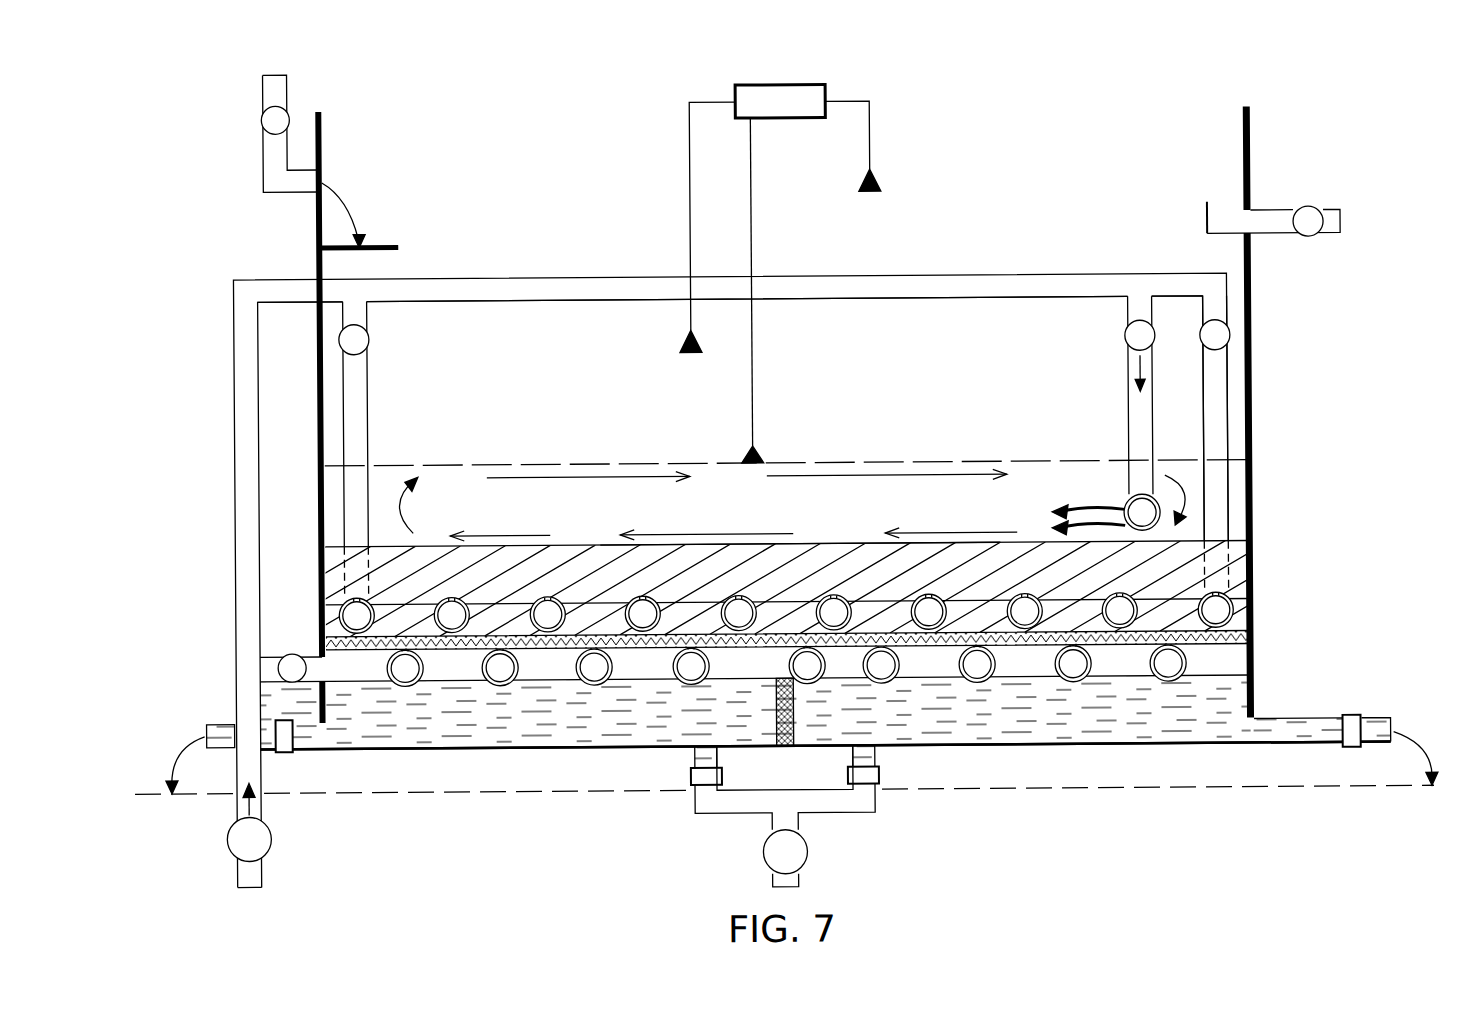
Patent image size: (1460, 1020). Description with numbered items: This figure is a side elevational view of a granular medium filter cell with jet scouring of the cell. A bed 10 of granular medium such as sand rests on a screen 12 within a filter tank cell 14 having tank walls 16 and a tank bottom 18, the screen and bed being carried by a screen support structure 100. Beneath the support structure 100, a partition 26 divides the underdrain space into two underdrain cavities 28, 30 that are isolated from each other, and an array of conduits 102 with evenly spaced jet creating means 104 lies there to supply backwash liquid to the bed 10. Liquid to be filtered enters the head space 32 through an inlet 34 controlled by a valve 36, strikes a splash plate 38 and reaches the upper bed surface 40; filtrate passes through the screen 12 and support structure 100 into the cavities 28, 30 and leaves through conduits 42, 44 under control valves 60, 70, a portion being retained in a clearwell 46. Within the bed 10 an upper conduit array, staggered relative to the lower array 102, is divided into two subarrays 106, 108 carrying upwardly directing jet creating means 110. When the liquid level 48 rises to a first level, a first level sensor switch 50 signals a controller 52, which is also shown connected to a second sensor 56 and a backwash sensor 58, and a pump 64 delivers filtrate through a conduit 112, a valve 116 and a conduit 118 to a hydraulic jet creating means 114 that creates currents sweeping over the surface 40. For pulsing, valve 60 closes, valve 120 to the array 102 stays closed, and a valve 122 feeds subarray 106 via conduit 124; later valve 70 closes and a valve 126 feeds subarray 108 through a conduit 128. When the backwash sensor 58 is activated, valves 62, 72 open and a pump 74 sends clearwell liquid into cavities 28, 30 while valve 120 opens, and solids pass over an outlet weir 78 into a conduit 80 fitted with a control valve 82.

The bed of granular medium 10 is at (838, 544).
The screen 12 is at (322, 637).
The filter tank cell 14 is at (1270, 174).
The tank walls 16 is at (318, 504).
The tank bottom 18 is at (430, 748).
The partition 26 is at (793, 700).
The underdrain cavity 28 is at (547, 722).
The underdrain cavity 30 is at (1106, 720).
The head space 32 is at (794, 361).
The inlet 34 is at (290, 149).
The valve 36 is at (290, 112).
The splash plate 38 is at (390, 242).
The upper bed surface 40 is at (560, 544).
The conduit 42 is at (210, 721).
The conduit 44 is at (1391, 731).
The clearwell 46 is at (456, 848).
The liquid level 48 is at (866, 462).
The first level sensor switch 50 is at (758, 447).
The controller 52 is at (800, 118).
The sensor 56 is at (686, 341).
The backwash sensor 58 is at (880, 180).
The control valve 60 is at (285, 750).
The valve 62 is at (689, 776).
The pump 64 is at (270, 836).
The control valve 70 is at (1350, 718).
The valve 72 is at (877, 776).
The pump 74 is at (805, 852).
The outlet weir 78 is at (1206, 221).
The conduit 80 is at (1265, 213).
The control valve 82 is at (1323, 220).
The screen support structure 100 is at (1256, 677).
The array of conduits 102 is at (419, 679).
The jet creating means 104 is at (696, 656).
The conduit subarray 106 is at (604, 600).
The conduit subarray 108 is at (1020, 544).
The jet creating means 110 is at (625, 614).
The conduit 112 is at (984, 277).
The hydraulic jet creating means 114 is at (1130, 498).
The valve 116 is at (1126, 338).
The conduit 118 is at (1128, 386).
The valve 120 is at (281, 680).
The valve 122 is at (370, 337).
The conduit 124 is at (368, 426).
The valve 126 is at (1231, 338).
The conduit 128 is at (1228, 426).